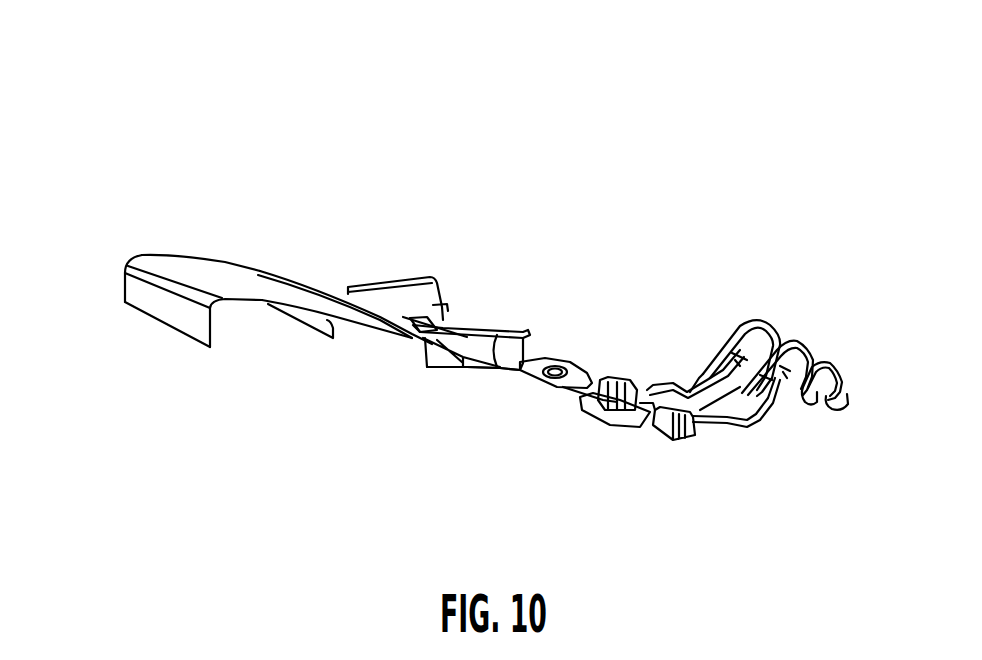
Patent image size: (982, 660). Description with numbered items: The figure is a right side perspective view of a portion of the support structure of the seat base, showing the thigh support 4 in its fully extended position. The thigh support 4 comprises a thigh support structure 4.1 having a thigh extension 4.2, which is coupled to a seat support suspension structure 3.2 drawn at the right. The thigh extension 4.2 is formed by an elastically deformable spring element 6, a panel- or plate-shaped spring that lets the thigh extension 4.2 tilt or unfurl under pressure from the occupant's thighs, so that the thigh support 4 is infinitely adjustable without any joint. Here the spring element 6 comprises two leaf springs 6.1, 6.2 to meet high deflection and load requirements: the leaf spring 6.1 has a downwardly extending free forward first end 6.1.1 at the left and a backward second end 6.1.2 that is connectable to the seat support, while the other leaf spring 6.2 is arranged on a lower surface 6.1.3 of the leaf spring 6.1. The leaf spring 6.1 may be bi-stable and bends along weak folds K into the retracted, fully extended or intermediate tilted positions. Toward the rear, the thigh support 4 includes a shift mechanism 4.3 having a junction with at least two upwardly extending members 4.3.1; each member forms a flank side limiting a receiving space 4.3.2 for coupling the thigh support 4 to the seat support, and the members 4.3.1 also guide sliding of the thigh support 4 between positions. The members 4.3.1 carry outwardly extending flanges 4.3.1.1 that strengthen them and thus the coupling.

The weak fold K is at (137, 262).
The seat support suspension structure 3.2 is at (746, 322).
The thigh support 4 is at (359, 69).
The thigh support structure 4.1 is at (295, 213).
The thigh extension 4.2 is at (227, 273).
The shift mechanism 4.3 is at (502, 297).
The upwardly extending member 4.3.1 is at (412, 300).
The outwardly extending flange 4.3.1.1 is at (518, 371).
The receiving space 4.3.2 is at (437, 308).
The spring element 6 is at (190, 266).
The leaf spring 6.1 is at (193, 301).
The free forward first end 6.1.1 is at (190, 337).
The backward second end 6.1.2 is at (428, 342).
The lower surface 6.1.3 is at (265, 303).
The leaf spring 6.2 is at (333, 340).